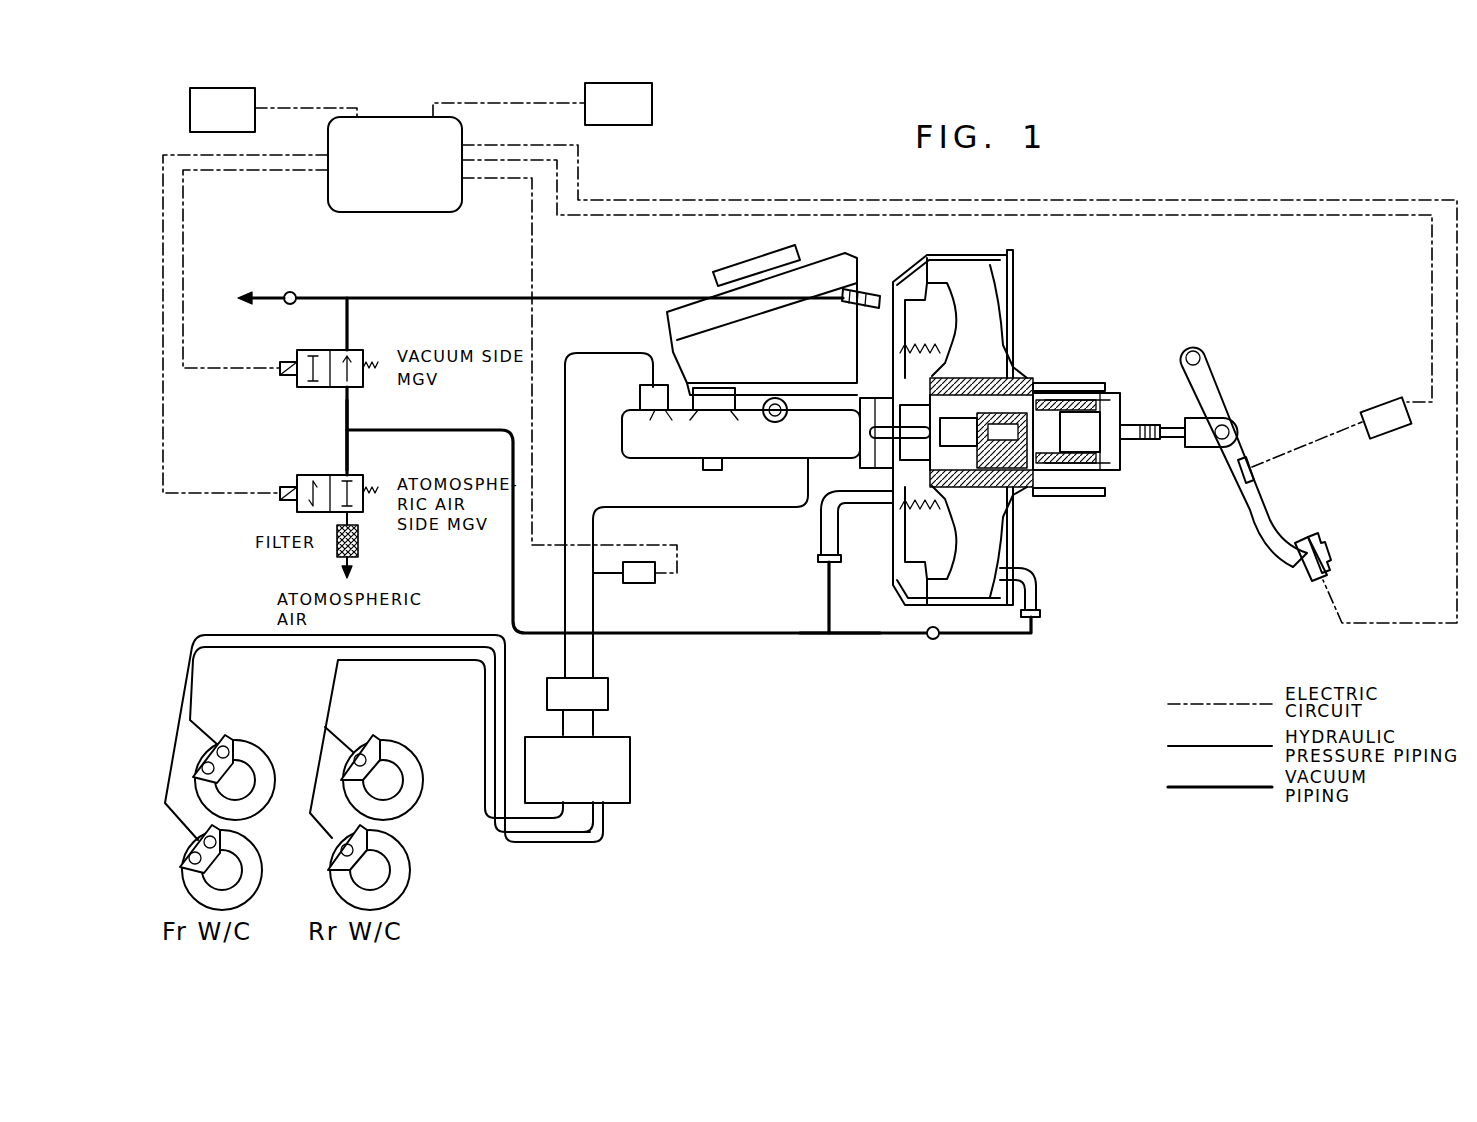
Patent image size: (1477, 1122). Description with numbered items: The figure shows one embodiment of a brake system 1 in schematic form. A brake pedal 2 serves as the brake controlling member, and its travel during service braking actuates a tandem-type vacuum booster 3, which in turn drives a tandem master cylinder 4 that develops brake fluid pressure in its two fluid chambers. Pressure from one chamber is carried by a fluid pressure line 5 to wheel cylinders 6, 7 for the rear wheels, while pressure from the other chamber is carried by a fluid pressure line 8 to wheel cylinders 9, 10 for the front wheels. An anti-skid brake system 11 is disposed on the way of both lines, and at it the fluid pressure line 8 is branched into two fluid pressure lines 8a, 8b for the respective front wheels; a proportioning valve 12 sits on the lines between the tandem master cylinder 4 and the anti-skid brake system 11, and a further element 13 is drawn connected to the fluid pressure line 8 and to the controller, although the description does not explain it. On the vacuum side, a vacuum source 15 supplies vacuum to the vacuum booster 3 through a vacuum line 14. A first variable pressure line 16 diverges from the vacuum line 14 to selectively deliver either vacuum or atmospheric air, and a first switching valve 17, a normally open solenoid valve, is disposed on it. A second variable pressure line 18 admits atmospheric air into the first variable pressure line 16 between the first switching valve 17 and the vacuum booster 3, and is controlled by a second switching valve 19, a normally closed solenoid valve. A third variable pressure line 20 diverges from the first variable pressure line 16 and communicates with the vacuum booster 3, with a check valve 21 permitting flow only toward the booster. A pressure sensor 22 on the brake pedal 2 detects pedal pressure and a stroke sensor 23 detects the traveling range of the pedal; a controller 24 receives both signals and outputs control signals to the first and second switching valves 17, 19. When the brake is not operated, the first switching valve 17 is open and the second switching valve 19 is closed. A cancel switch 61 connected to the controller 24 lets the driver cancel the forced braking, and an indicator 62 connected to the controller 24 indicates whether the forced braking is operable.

The brake system 1 is at (790, 710).
The brake pedal 2 is at (1298, 575).
The vacuum booster 3 is at (1020, 353).
The tandem master cylinder 4 is at (625, 443).
The fluid pressure line 5 is at (565, 612).
The wheel cylinder 6 is at (333, 856).
The wheel cylinder 7 is at (372, 740).
The fluid pressure line 8 is at (755, 507).
The fluid pressure line 8a is at (540, 842).
The fluid pressure line 8b is at (570, 832).
The wheel cylinder 9 is at (190, 860).
The wheel cylinder 10 is at (220, 745).
The anti-skid brake system 11 is at (626, 765).
The proportioning valve 12 is at (600, 692).
The hydraulic pressure sensor 13 is at (650, 580).
The vacuum line 14 is at (578, 298).
The vacuum source 15 is at (246, 325).
The first variable pressure line 16 is at (352, 312).
The first switching valve 17 is at (355, 390).
The second variable pressure line 18 is at (340, 460).
The second switching valve 19 is at (353, 478).
The third variable pressure line 20 is at (841, 633).
The check valve 21 is at (945, 637).
The pressure sensor 22 is at (1332, 563).
The stroke sensor 23 is at (1384, 430).
The controller 24 is at (399, 117).
The cancel switch 61 is at (643, 114).
The indicator 62 is at (246, 116).